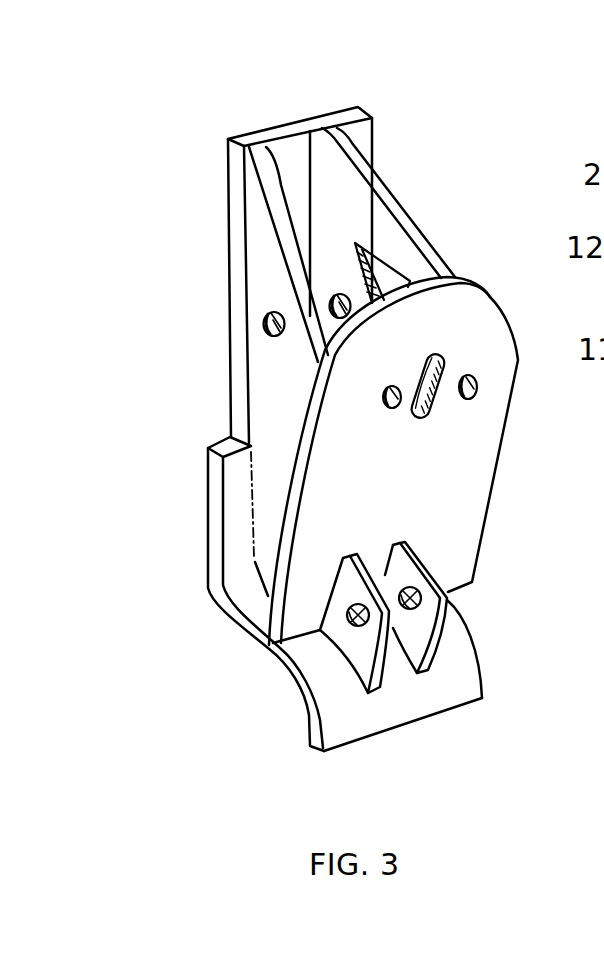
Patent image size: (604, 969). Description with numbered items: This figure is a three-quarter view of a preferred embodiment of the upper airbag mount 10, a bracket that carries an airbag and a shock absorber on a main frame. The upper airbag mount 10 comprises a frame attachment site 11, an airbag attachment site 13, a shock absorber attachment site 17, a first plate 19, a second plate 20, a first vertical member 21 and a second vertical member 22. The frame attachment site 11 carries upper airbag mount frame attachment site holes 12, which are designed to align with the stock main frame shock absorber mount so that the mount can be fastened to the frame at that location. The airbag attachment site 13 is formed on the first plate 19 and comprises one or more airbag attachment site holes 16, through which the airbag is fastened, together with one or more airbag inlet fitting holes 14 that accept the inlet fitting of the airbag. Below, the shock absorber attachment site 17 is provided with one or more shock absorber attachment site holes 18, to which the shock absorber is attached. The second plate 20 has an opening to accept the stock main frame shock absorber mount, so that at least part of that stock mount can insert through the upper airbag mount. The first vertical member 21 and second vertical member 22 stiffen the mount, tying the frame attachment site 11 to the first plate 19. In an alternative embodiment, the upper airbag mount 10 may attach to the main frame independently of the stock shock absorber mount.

The upper airbag mount 10 is at (227, 131).
The frame attachment site 11 is at (249, 350).
The upper airbag mount frame attachment site holes 12 is at (272, 312).
The airbag attachment site 13 is at (466, 420).
The airbag inlet fitting holes 14 is at (427, 420).
The airbag attachment site holes 16 is at (385, 393).
The shock absorber attachment site 17 is at (366, 655).
The shock absorber attachment site holes 18 is at (352, 632).
The first plate 19 is at (465, 537).
The second plate 20 is at (363, 150).
The first vertical member 21 is at (263, 237).
The second vertical member 22 is at (350, 203).